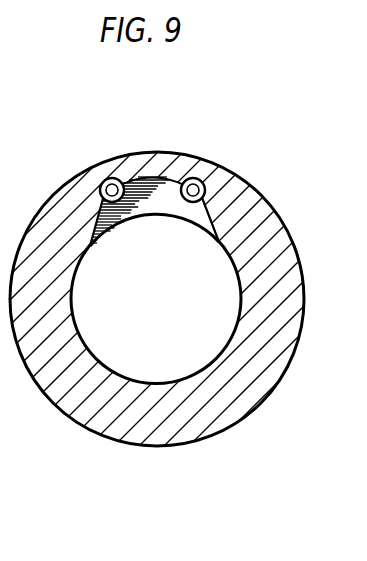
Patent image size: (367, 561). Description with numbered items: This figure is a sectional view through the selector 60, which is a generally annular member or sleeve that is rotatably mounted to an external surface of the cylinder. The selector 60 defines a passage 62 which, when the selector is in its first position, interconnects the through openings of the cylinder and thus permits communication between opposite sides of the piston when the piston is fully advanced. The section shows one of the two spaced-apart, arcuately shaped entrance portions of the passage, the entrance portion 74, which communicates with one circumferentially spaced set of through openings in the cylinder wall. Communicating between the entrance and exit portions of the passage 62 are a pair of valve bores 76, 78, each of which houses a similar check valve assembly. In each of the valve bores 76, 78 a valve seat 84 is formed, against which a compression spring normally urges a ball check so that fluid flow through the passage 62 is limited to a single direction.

The selector member 60 is at (162, 437).
The passage 62 is at (148, 160).
The arcuately shaped entrance portion 74 is at (167, 200).
The valve bore 76 is at (100, 190).
The valve bore 78 is at (205, 187).
The valve seat 84 is at (109, 178).